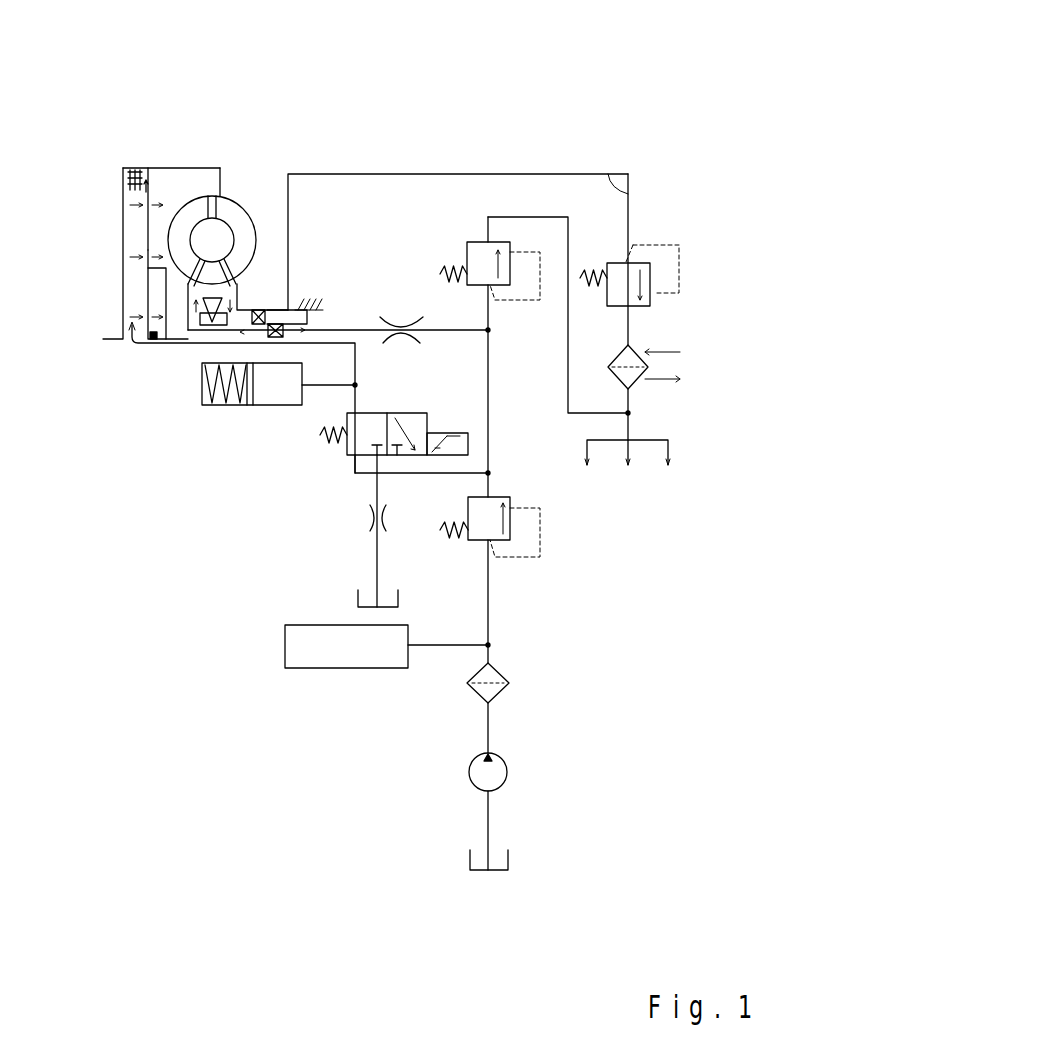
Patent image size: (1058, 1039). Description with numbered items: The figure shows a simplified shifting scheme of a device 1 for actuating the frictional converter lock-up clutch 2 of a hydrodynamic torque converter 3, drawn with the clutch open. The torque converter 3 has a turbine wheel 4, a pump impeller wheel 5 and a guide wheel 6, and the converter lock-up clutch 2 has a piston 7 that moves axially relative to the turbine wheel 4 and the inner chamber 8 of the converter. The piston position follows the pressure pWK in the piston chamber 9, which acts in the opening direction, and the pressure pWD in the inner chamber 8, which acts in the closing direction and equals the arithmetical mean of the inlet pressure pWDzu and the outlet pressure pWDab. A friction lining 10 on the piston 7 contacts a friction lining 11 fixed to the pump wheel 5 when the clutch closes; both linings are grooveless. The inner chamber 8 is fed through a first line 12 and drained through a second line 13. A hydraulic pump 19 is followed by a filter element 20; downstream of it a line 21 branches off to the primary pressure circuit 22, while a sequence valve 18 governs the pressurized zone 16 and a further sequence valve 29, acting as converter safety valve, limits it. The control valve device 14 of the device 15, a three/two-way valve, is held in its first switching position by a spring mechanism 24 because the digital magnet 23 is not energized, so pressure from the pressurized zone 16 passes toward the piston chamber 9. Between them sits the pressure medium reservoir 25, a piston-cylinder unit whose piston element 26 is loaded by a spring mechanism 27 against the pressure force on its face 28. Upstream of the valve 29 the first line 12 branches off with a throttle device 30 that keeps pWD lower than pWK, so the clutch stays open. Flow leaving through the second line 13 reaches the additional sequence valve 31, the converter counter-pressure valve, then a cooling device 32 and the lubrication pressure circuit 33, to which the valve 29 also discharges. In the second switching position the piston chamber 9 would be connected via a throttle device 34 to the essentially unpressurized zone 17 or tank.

The device 1 is at (511, 179).
The converter lock-up clutch 2 is at (141, 149).
The hydrodynamic torque converter 3 is at (251, 166).
The turbine wheel 4 is at (224, 168).
The pump impeller wheel 5 is at (294, 155).
The guide wheel 6 is at (111, 330).
The piston 7 is at (121, 271).
The inner chamber of the converter 8 is at (197, 122).
The piston chamber 9 is at (101, 200).
The friction lining 10 is at (141, 108).
The friction lining 11 is at (80, 231).
The first line 12 is at (469, 323).
The second line 13 is at (679, 234).
The control valve device 14 is at (196, 568).
The device 15 is at (232, 546).
The pressurized zone 16 is at (618, 543).
The essentially unpressurized zone 17 is at (554, 747).
The sequence valve 18 is at (595, 558).
The pressure medium source 19 is at (610, 800).
The filter element 20 is at (609, 726).
The line 21 is at (264, 775).
The primary pressure circuit 22 is at (223, 738).
The digital magnet 23 is at (589, 426).
The spring mechanism 24 is at (192, 581).
The pressure medium reservoir 25 is at (197, 435).
The piston element 26 is at (145, 493).
The spring mechanism 27 is at (142, 465).
The face 28 is at (418, 196).
The further sequence valve 29 is at (609, 240).
The throttle device 30 is at (519, 165).
The additional sequence valve 31 is at (665, 272).
The cooling device 32 is at (679, 392).
The lubrication pressure circuit 33 is at (668, 472).
The throttle device 34 is at (560, 566).
The pressure in the piston chamber pWK is at (255, 372).
The pressure in the converter's inner chamber pWD is at (155, 367).
The inlet pressure pWDzu is at (433, 171).
The outlet pressure pWDab is at (593, 214).